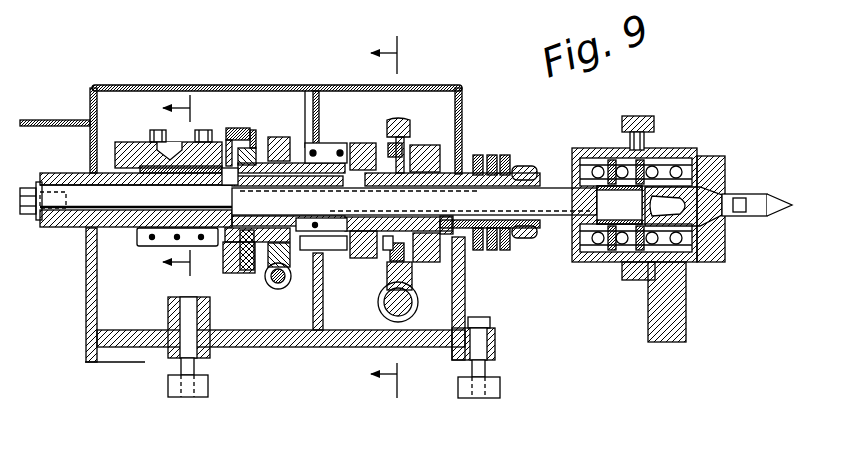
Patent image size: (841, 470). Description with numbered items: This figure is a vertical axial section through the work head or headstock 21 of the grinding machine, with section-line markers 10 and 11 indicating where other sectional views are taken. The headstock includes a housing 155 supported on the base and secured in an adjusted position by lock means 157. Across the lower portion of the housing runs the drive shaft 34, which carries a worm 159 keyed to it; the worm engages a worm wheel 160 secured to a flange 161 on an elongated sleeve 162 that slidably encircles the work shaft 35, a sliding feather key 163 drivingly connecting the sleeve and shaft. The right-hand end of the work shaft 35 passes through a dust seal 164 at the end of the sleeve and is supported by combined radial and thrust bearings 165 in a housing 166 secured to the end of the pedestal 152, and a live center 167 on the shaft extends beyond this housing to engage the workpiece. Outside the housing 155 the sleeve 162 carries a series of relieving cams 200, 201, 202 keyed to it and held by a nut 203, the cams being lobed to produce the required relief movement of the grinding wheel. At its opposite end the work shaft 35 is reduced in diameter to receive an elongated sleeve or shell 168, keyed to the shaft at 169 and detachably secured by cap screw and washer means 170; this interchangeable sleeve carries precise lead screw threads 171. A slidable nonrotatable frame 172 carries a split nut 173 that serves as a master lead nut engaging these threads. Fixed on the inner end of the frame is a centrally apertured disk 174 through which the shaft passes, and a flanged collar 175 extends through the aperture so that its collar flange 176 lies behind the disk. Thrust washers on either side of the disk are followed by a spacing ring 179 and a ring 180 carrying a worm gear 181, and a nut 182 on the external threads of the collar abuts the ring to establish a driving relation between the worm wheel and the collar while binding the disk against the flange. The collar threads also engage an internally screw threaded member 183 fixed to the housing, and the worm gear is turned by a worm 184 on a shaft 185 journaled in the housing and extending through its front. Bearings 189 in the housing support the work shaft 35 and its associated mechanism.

The work head or headstock 21 is at (243, 84).
The section line 10- 10 is at (401, 217).
The section line 11- 11 is at (189, 187).
The drive shaft 34 is at (384, 304).
The work shaft 35 is at (518, 231).
The pedestal 152 is at (690, 302).
The housing 155 is at (465, 110).
The lock means 157 is at (208, 383).
The worm 159 is at (379, 294).
The worm wheel 160 is at (387, 272).
The flange 161 is at (405, 262).
The elongated sleeve 162 is at (385, 209).
The sliding feather key 163 is at (420, 186).
The dust seal 164 is at (506, 249).
The combined radial and thrust bearings 165 is at (604, 142).
The housing 166 is at (652, 136).
The live center 167 is at (772, 198).
The elongated sleeve or shell 168 is at (66, 228).
The key 169 is at (205, 193).
The cap screw and washer means 170 is at (30, 190).
The lead screw threads 171 is at (102, 228).
The slidable nonrotatable frame 172 is at (135, 150).
The split nut 173 is at (152, 246).
The centrally apertured disk 174 is at (253, 130).
The flanged collar 175 is at (326, 153).
The collar flange 176 is at (236, 130).
The spacing ring 179 is at (276, 138).
The ring 180 is at (289, 223).
The worm gear 181 is at (258, 270).
The nut 182 is at (292, 243).
The internally screw threaded member 183 is at (330, 143).
The worm 184 is at (284, 289).
The shaft 185 is at (274, 283).
The bearings 189 is at (366, 141).
The cam 200 is at (478, 155).
The cam 201 is at (492, 155).
The cam 202 is at (506, 156).
The nut 203 is at (525, 168).